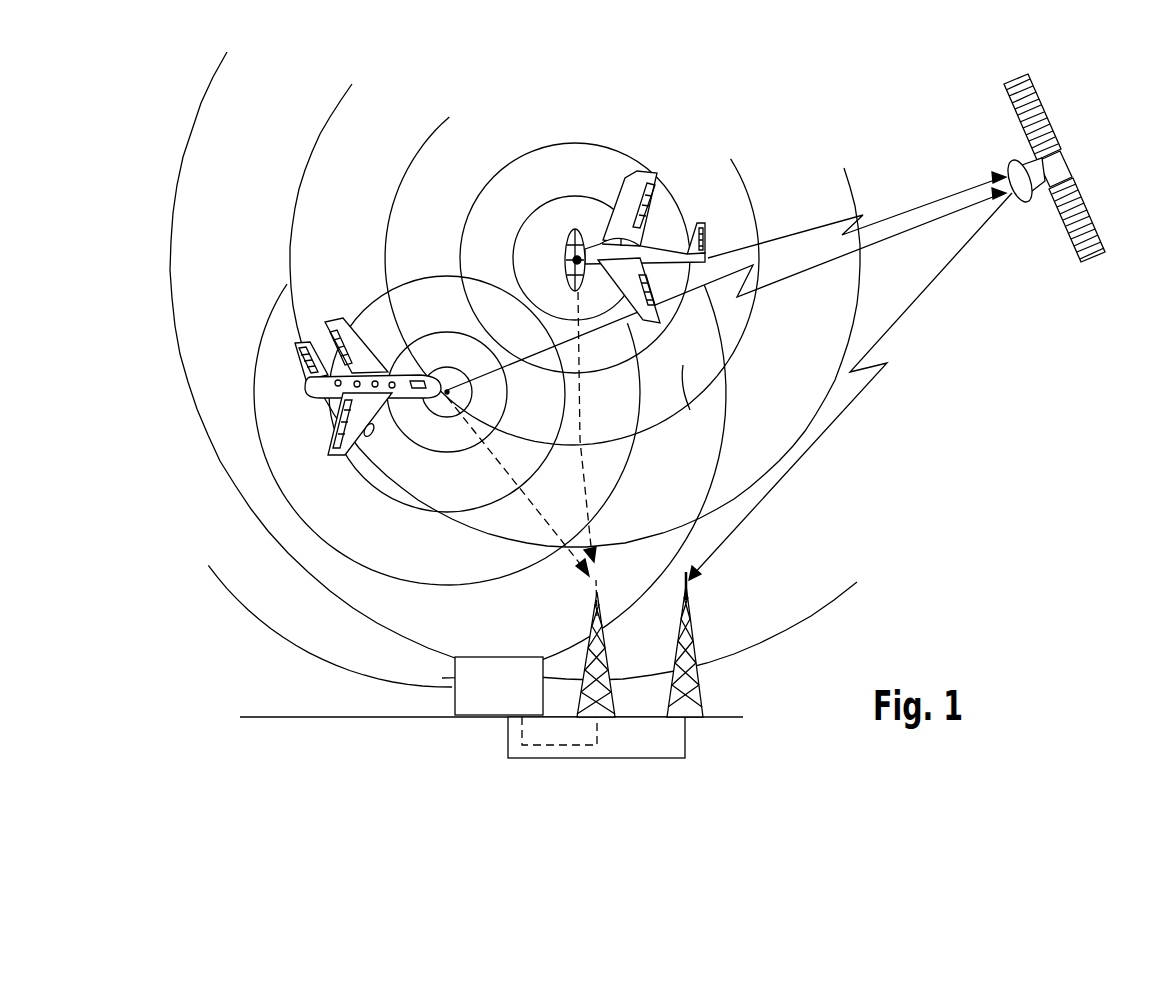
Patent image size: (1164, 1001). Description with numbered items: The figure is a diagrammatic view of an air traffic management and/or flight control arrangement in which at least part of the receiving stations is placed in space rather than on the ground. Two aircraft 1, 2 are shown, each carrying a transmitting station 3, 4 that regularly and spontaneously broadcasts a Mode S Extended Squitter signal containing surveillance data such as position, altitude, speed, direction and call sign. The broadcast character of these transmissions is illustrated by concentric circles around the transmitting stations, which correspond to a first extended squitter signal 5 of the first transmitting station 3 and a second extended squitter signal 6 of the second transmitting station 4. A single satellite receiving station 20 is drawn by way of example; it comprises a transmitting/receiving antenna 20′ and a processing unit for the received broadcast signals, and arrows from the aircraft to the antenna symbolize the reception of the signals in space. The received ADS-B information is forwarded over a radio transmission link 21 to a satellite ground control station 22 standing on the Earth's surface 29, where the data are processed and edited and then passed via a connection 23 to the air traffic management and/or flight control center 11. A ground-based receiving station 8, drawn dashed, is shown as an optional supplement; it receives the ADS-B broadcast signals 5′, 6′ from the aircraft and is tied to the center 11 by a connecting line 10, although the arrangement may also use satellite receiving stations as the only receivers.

The aircraft 1 is at (352, 324).
The aircraft 2 is at (640, 182).
The first transmitting station 3 is at (447, 385).
The second transmitting station 4 is at (565, 258).
The first 1090 ES signal 5 is at (423, 457).
The ADS-B broadcast signal 5′ is at (544, 522).
The second 1090 ES signal 6 is at (645, 353).
The ADS-B broadcast signal 6′ is at (580, 427).
The ground-based receiving station 8 is at (597, 622).
The connecting line 10 is at (548, 757).
The air traffic management and/or flight control center 11 is at (499, 686).
The satellite receiving station 20 is at (1080, 151).
The transmitting/receiving antenna 20′ is at (1040, 180).
The radio transmission link 21 is at (923, 296).
The satellite ground control station 22 is at (695, 625).
The connection 23 is at (628, 758).
The Earth's surface 29 is at (318, 717).